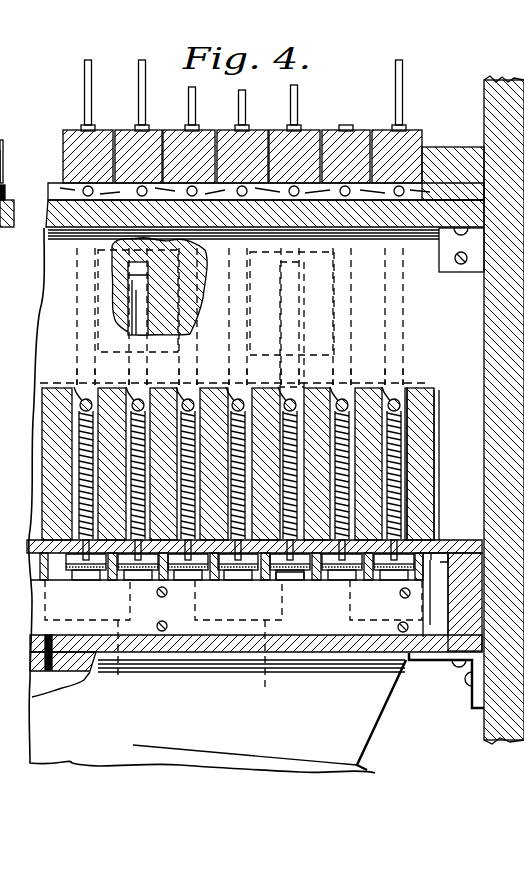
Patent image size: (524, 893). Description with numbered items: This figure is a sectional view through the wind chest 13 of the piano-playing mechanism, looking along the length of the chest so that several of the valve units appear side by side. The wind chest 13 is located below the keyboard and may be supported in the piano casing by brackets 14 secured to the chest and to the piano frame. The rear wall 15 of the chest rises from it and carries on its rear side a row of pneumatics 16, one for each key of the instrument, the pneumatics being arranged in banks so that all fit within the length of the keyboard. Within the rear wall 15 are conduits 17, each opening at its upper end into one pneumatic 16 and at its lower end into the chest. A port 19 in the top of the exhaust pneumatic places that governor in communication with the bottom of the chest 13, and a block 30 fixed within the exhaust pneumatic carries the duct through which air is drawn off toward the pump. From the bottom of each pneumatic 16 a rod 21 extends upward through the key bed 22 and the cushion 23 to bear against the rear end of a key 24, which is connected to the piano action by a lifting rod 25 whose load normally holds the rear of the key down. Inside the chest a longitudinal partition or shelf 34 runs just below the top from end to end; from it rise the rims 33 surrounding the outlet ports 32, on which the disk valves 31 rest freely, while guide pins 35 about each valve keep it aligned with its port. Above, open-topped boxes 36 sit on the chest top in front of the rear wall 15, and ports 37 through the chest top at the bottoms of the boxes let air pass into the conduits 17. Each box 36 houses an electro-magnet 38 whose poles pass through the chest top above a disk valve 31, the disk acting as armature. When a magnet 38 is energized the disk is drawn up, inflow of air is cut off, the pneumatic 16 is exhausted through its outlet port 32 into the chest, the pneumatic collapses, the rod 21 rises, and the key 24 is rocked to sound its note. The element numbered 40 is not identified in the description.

The wind chest 13 is at (440, 570).
The brackets 14 is at (472, 262).
The rear wall 15 is at (46, 305).
The pneumatic 16 is at (345, 352).
The conduit 17 is at (180, 312).
The port 19 is at (30, 672).
The rod 21 is at (338, 312).
The key bed 22 is at (427, 232).
The cushion 23 is at (58, 183).
The key 24 is at (200, 135).
The lifting rod 25 is at (10, 124).
The block 30 is at (32, 648).
The disk valve 31 is at (75, 583).
The outlet port 32 is at (185, 584).
The rim 33 is at (145, 585).
The partition 34 is at (114, 584).
The guide pins 35 is at (296, 585).
The box 36 is at (436, 402).
The port 37 is at (400, 532).
The electro-magnet 38 is at (135, 400).
The spring block 40 is at (78, 438).